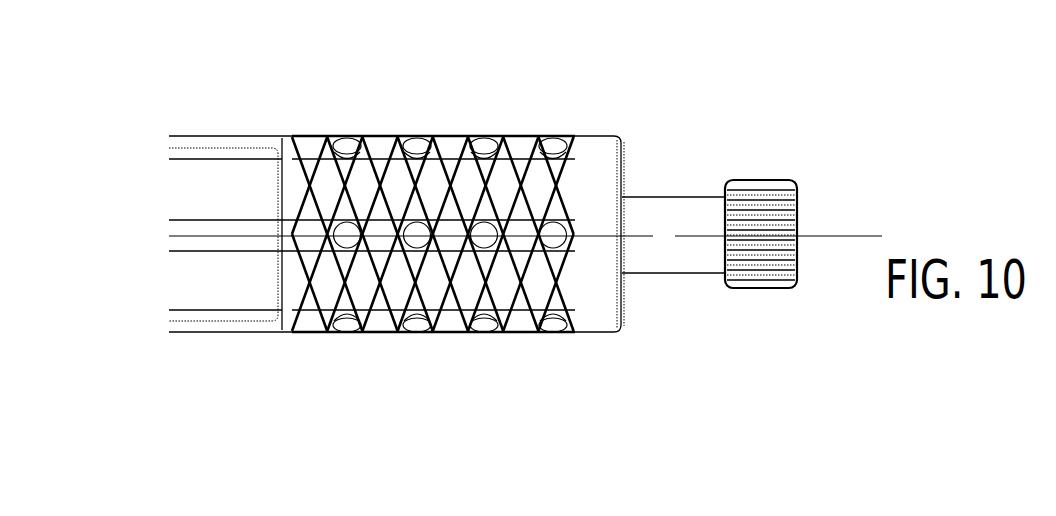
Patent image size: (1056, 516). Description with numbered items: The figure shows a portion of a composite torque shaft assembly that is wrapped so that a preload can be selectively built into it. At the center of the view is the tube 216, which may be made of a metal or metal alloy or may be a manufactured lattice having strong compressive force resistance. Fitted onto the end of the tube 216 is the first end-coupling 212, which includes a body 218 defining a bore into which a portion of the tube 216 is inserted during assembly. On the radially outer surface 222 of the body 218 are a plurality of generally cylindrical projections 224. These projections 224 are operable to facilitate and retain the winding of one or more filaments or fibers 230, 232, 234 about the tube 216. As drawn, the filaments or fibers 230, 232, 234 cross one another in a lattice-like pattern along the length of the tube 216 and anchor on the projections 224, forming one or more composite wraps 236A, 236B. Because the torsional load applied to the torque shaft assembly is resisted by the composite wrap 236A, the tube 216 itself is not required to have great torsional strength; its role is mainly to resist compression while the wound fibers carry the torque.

The first end-coupling 212 is at (597, 193).
The tube 216 is at (192, 195).
The body 218 is at (602, 310).
The radially outer surface 222 is at (585, 162).
The cylindrical projections 224 is at (488, 324).
The filament or fiber 230 is at (460, 138).
The filament or fiber 232 is at (369, 137).
The filament or fiber 234 is at (200, 136).
The composite wrap 236A is at (397, 333).
The composite wrap 236B is at (230, 335).